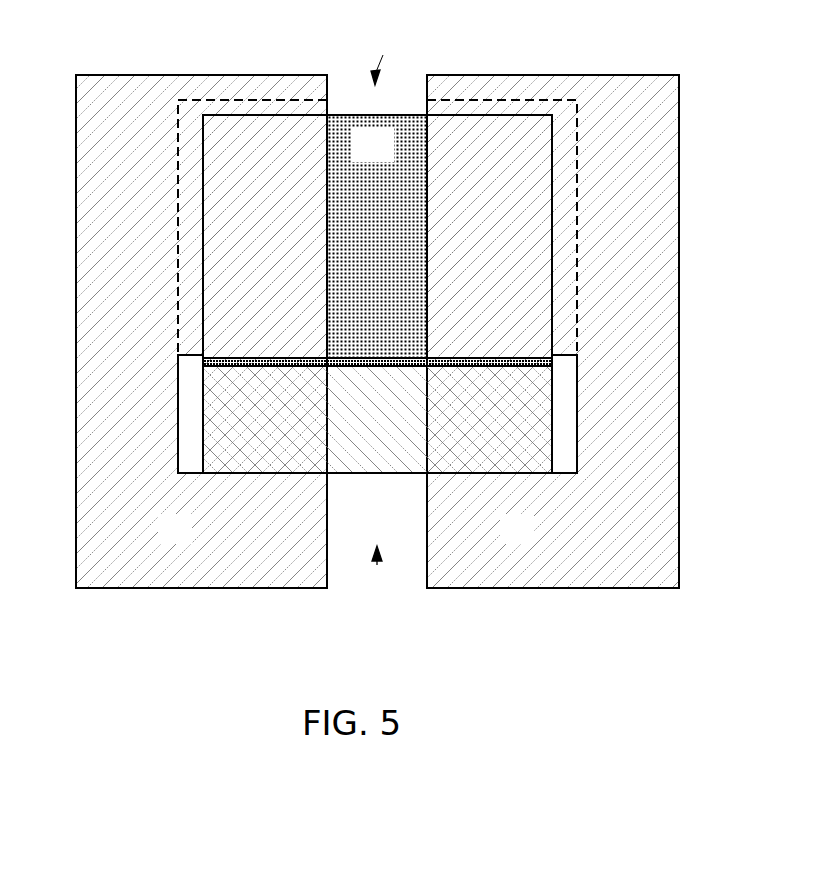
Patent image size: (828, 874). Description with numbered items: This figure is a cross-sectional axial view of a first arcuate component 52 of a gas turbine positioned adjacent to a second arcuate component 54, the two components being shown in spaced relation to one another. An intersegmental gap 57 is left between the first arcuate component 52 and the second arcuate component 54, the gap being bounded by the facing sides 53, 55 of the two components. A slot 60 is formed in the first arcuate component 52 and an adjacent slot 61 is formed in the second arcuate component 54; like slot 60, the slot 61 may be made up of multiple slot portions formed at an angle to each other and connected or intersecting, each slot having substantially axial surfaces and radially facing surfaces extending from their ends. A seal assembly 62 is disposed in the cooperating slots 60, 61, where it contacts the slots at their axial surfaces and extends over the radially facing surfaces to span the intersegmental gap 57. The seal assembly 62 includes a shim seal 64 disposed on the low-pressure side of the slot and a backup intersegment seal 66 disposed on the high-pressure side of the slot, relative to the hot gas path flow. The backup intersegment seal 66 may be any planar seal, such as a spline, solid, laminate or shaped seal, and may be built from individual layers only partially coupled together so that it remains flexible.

The first arcuate component 52 is at (188, 541).
The second arcuate component 54 is at (530, 541).
The sidewall of first portion 53 is at (327, 555).
The sidewall of second portion 55 is at (427, 557).
The intersegmental gap 57 is at (377, 562).
The slot 60 is at (178, 167).
The slot 61 is at (577, 212).
The seal assembly 62 is at (383, 55).
The shim seal 64 is at (386, 157).
The backup intersegment seal 66 is at (203, 378).